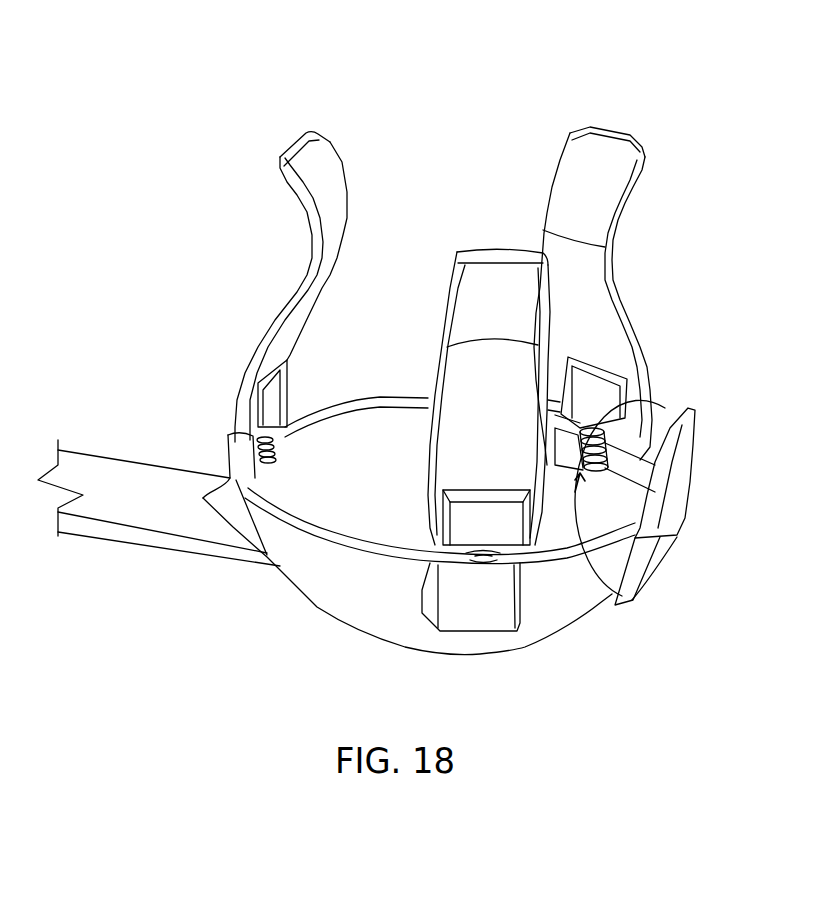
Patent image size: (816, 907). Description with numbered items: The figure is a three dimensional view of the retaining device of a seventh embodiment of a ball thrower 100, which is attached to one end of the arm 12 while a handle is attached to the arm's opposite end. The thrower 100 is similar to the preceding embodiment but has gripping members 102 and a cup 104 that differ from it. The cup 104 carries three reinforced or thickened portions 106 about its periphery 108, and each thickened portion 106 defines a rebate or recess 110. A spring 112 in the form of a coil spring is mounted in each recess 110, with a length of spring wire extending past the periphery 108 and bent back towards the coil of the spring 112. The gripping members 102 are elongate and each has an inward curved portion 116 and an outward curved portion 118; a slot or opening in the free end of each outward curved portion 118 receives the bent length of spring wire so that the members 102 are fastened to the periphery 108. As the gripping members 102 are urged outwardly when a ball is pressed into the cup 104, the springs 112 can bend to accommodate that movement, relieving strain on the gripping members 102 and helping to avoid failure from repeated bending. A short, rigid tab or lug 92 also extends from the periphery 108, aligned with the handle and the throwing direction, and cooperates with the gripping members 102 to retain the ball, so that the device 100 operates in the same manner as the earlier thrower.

The ball thrower 100 is at (347, 61).
The arm 12 is at (103, 476).
The tab or lug 92 is at (688, 478).
The gripping member 102 is at (343, 178).
The cup 104 is at (317, 580).
The reinforced or thickened portion 106 is at (226, 453).
The periphery 108 is at (374, 397).
The rebate or recess 110 is at (645, 598).
The spring 112 is at (628, 405).
The inward curved portion 116 is at (304, 212).
The outward curved portion 118 is at (241, 383).